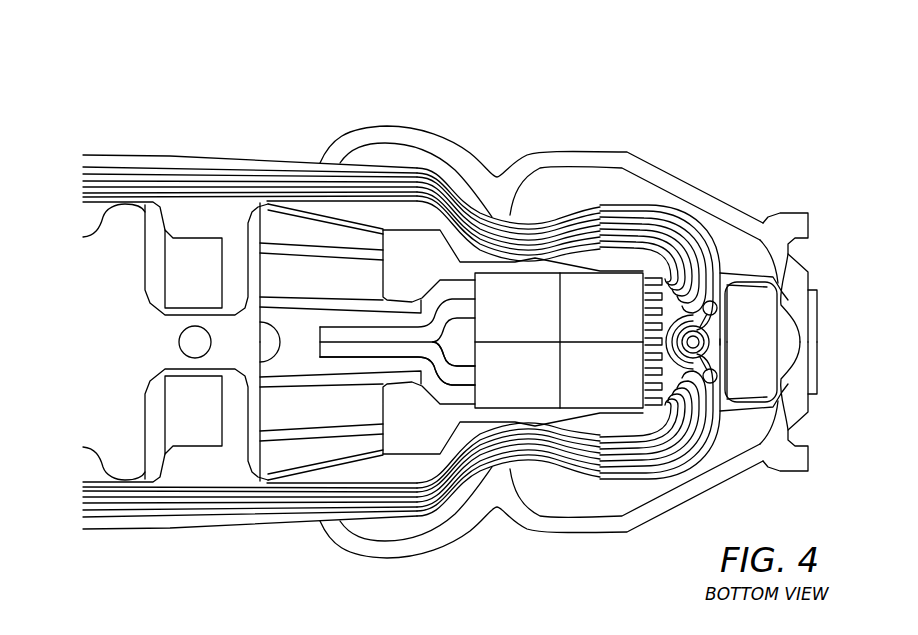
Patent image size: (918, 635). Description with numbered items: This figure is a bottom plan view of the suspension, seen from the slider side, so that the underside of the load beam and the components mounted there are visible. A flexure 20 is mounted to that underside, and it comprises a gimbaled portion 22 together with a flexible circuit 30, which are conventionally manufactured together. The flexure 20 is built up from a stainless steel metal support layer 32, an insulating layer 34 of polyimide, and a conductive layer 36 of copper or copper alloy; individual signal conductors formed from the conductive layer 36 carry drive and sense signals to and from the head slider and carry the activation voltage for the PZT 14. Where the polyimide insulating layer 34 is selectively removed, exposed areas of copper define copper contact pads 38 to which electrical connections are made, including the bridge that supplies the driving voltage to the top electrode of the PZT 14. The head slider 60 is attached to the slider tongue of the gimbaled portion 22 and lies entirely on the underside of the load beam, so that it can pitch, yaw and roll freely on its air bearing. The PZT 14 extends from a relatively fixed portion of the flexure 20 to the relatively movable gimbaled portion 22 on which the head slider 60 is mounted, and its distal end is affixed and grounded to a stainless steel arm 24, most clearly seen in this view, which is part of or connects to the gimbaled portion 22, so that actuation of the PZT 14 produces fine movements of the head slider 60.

The flexure 20 is at (450, 314).
The gimbaled portion 22 is at (455, 82).
The stainless steel arm 24 is at (407, 253).
The flexible circuit 30 is at (137, 155).
The PZT 14 is at (295, 280).
The stainless steel metal support layer 32 is at (130, 467).
The insulating layer 34 is at (204, 473).
The conductive layer 36 is at (165, 465).
The copper contact pads 38 is at (206, 432).
The head slider 60 is at (613, 297).